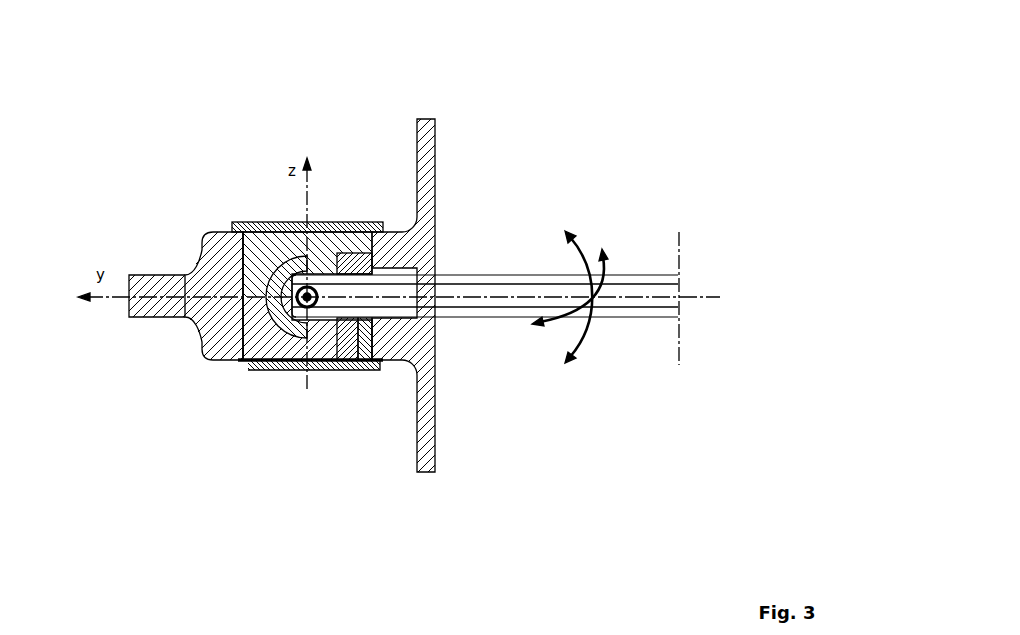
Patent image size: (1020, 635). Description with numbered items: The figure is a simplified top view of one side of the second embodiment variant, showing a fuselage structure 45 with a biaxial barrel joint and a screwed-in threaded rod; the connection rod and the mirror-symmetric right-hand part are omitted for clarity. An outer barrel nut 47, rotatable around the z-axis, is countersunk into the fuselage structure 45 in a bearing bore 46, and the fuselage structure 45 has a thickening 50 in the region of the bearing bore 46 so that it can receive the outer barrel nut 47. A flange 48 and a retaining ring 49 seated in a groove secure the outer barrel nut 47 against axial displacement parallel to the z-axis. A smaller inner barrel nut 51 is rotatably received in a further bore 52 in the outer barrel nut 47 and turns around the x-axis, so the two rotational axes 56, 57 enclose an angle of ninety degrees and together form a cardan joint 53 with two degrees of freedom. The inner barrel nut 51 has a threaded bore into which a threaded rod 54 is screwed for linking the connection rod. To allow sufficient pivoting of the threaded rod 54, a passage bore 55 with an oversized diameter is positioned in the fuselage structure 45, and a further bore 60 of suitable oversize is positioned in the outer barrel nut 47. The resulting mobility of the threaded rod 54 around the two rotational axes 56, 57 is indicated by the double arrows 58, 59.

The fuselage structure 45 is at (137, 275).
The bearing bore 46 is at (240, 333).
The outer barrel nut 47 is at (255, 252).
The flange 48 is at (378, 223).
The retaining ring 49 is at (237, 362).
The thickening 50 is at (200, 258).
The inner barrel nut 51 is at (347, 340).
The further bore 52 is at (278, 362).
The joint 53 is at (351, 182).
The threaded rod 54 is at (510, 287).
The passage bore 55 is at (408, 321).
The rotational axis 56 is at (316, 308).
The rotational axis 57 is at (303, 207).
The double arrow 58 is at (588, 262).
The double arrow 59 is at (618, 297).
The further bore 60 is at (362, 362).